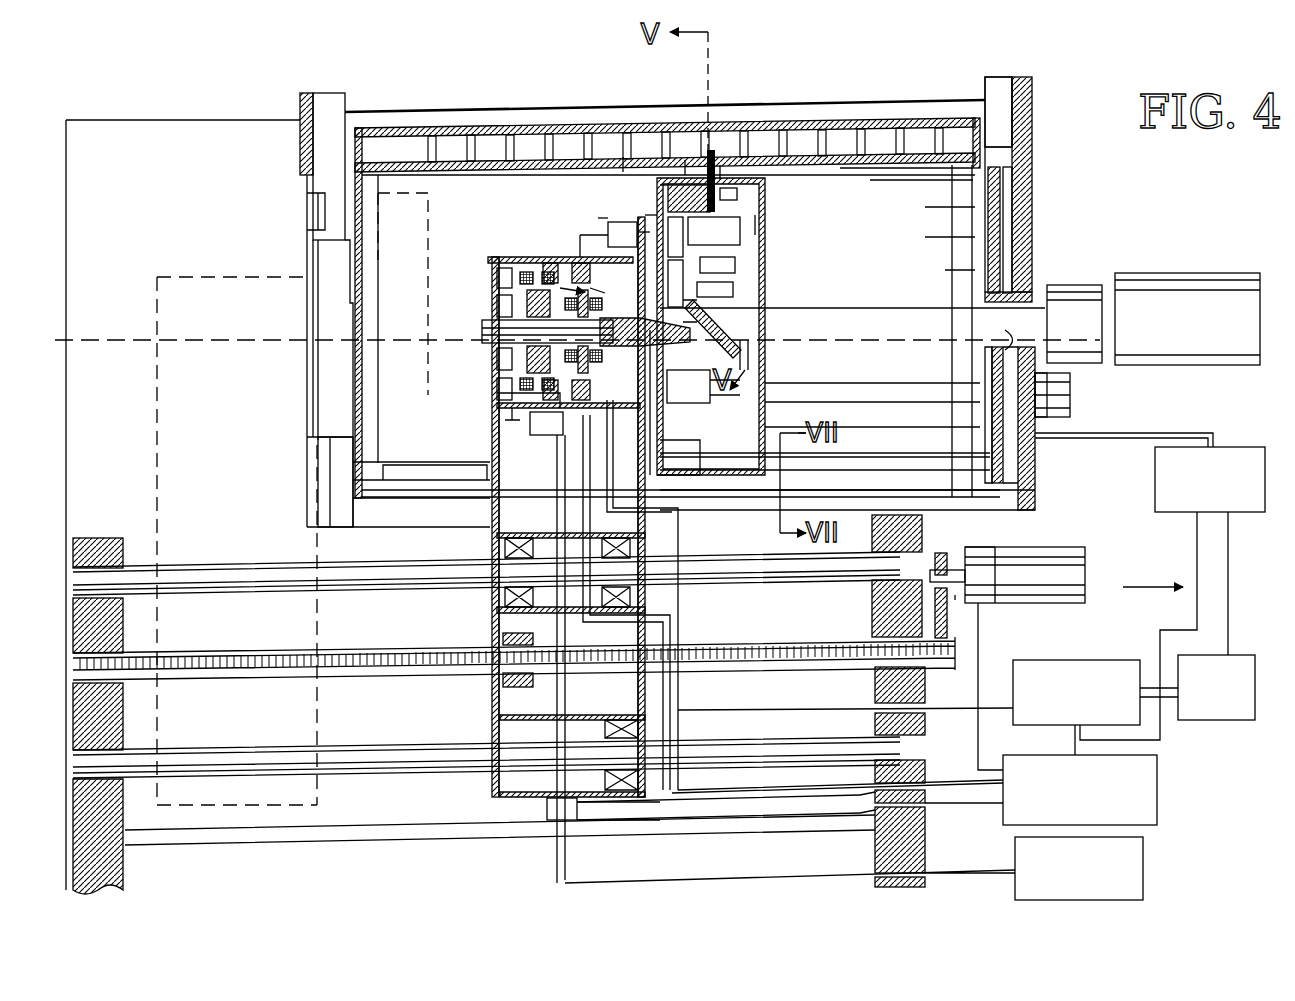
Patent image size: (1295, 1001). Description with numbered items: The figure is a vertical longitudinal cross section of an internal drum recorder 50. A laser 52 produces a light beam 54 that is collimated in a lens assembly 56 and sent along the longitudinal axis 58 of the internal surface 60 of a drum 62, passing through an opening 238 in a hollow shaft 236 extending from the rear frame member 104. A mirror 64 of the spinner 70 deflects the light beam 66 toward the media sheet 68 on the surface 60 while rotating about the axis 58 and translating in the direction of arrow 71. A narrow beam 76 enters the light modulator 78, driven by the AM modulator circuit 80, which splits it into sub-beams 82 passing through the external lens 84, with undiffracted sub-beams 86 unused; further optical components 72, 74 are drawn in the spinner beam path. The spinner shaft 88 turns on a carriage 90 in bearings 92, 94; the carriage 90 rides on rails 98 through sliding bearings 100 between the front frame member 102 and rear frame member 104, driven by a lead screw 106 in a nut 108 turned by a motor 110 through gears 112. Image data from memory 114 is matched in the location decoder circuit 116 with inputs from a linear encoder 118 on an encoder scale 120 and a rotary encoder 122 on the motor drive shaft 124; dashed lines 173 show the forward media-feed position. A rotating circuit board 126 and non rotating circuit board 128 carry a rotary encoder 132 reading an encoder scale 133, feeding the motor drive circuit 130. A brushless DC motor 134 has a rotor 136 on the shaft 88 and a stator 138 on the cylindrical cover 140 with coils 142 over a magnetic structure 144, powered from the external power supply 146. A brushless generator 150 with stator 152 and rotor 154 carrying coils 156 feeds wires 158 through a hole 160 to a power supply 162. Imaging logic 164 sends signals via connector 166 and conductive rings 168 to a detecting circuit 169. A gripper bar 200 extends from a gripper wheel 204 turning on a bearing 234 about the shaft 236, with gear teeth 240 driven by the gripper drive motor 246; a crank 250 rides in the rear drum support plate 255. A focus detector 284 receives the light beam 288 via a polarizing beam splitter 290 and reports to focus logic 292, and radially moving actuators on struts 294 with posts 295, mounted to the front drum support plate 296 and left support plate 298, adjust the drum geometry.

The internal drum recorder 50 is at (515, 110).
The laser 52 is at (1185, 272).
The light beam 54 is at (1105, 297).
The lens assembly 56 is at (1080, 370).
The longitudinal axis 58 is at (242, 338).
The internal surface 60 is at (850, 180).
The drum 62 is at (882, 112).
The mirror 64 is at (742, 352).
The light beam 66 is at (908, 306).
The media sheet 68 is at (960, 180).
The spinner 70 is at (768, 262).
The arrow 71 is at (1153, 604).
The lens element 72 is at (738, 292).
The lens element 74 is at (740, 268).
The narrow beam 76 is at (740, 255).
The multi-spot light modulator 78 is at (742, 230).
The AM modulator circuit 80 is at (650, 215).
The sub-beams 82 is at (690, 160).
The external lens 84 is at (720, 180).
The undiffracted sub-beams 86 is at (665, 185).
The shaft 88 is at (484, 340).
The carriage 90 is at (492, 718).
The bearing 92 is at (492, 380).
The bearing 94 is at (613, 300).
The rails 98 is at (760, 590).
The sliding bearings 100 is at (495, 552).
The front frame member 102 is at (130, 862).
The rear frame member 104 is at (875, 845).
The lead screw 106 is at (760, 640).
The nut 108 is at (500, 628).
The motor 110 is at (1087, 578).
The gears 112 is at (950, 595).
The memory 114 is at (1215, 720).
The location decoder circuit 116 is at (1157, 790).
The linear encoder 118 is at (548, 820).
The encoder scale 120 is at (455, 818).
The rotary encoder 122 is at (1000, 548).
The motor drive shaft 124 is at (965, 552).
The rotating circuit board 126 is at (640, 232).
The non rotating circuit board 128 is at (600, 218).
The motor drive circuit 130 is at (548, 435).
The rotary encoder 132 is at (640, 255).
The encoder scale 133 is at (620, 165).
The brushless DC motor 134 is at (492, 300).
The rotor 136 is at (490, 355).
The stator 138 is at (492, 262).
The cylindrical cover 140 is at (490, 418).
The coils 142 is at (498, 432).
The magnetic structure 144 is at (558, 490).
The external power supply 146 is at (1143, 873).
The brushless generator 150 is at (590, 290).
The stator 152 is at (575, 268).
The rotor 154 is at (560, 290).
The coils 156 is at (535, 300).
The wires 158 is at (752, 383).
The hole 160 is at (760, 365).
The power supply 162 is at (755, 403).
The imaging logic 164 is at (1070, 660).
The connector 166 is at (670, 440).
The concentric conductive rings 168 is at (672, 412).
The detecting circuit 169 is at (740, 312).
The dashed lines 173 is at (222, 277).
The gripper bar 200 is at (405, 492).
The gripper wheel 204 is at (1000, 200).
The bearing 234 is at (1033, 262).
The hollow shaft 236 is at (960, 235).
The opening 238 is at (1003, 340).
The gear teeth 240 is at (1000, 168).
The gripper drive motor 246 is at (1072, 398).
The crank 250 is at (1035, 465).
The rear drum support plate 255 is at (1032, 150).
The focus detector 284 is at (757, 230).
The light beam 288 is at (752, 212).
The polarizing beam splitter 290 is at (750, 150).
The focus logic 292 is at (1220, 447).
The struts 294 is at (405, 150).
The posts 295 is at (410, 170).
The front drum support plate 296 is at (300, 140).
The left support plate 298 is at (182, 120).